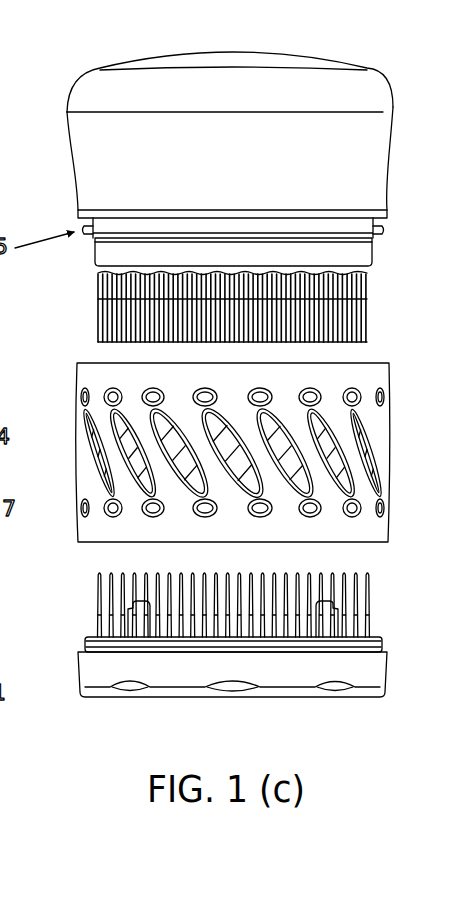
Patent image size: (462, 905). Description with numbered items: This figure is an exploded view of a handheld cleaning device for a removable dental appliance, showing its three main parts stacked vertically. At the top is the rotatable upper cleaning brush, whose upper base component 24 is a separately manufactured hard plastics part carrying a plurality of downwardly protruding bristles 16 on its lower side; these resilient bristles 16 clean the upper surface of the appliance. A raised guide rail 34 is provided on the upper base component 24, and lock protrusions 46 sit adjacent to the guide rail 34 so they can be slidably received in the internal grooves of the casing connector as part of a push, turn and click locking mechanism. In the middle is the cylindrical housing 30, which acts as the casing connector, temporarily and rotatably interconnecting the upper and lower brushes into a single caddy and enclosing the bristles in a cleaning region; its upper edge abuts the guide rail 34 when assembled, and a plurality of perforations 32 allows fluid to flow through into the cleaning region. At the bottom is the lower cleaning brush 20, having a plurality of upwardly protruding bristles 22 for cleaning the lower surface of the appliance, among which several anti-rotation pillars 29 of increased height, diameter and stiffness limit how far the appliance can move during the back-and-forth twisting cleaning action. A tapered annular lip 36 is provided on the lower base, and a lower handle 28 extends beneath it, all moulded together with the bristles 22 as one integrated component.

The downwardly protruding bristles 16 is at (95, 304).
The lower cleaning brush 20 is at (225, 645).
The upwardly protruding bristles 22 is at (367, 590).
The upper base component 24 is at (360, 252).
The lower handle 28 is at (92, 680).
The anti-rotation pillars 29 is at (332, 622).
The cylindrical housing 30 is at (385, 373).
The perforations 32 is at (388, 496).
The raised guide rail 34 is at (76, 213).
The annular lip 36 is at (80, 645).
The lock protrusions 46 is at (388, 230).